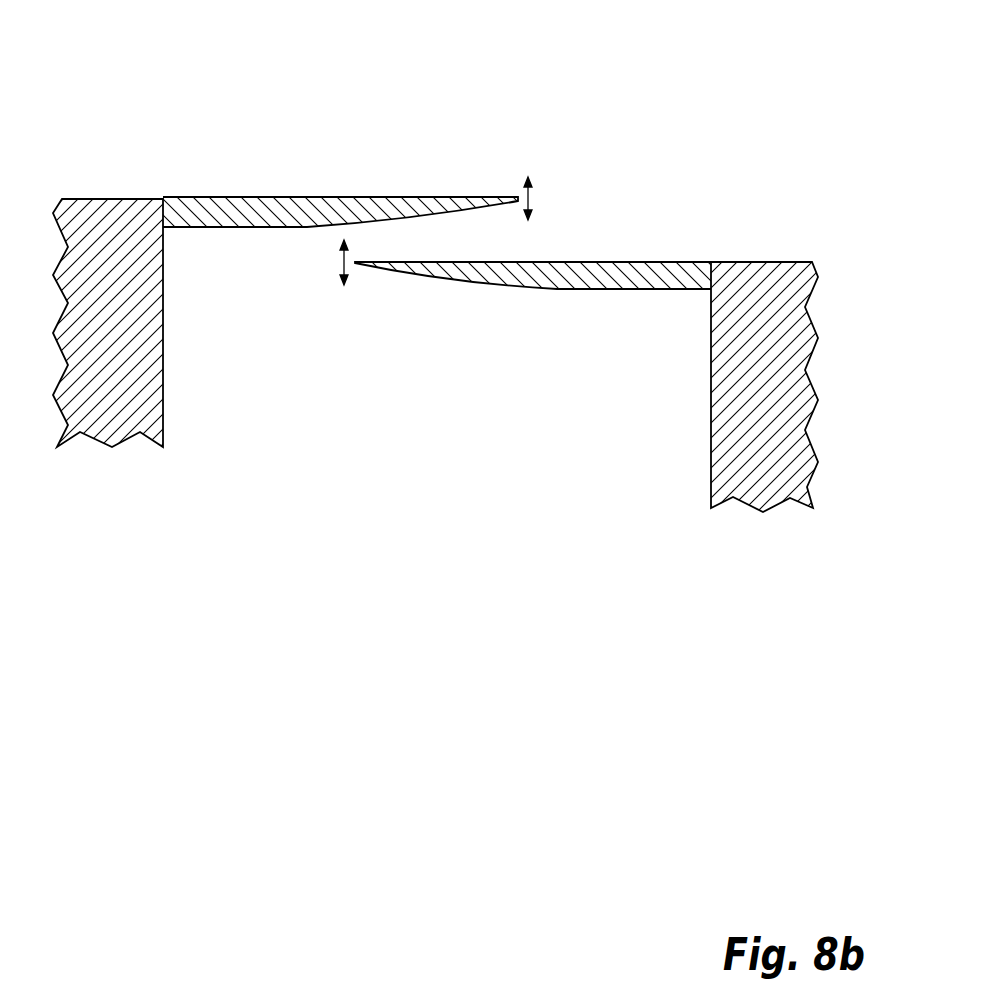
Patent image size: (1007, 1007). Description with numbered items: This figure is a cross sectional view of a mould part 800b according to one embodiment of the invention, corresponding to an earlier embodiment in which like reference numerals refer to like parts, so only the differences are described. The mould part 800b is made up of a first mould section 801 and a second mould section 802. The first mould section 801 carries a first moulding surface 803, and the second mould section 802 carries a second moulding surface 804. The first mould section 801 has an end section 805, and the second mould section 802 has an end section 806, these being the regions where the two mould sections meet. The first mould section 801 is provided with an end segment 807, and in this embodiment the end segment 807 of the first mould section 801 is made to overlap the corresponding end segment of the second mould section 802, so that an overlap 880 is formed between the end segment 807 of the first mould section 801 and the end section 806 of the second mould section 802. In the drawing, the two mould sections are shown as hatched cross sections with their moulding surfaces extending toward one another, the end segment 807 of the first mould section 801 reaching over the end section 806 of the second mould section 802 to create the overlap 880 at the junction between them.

The mould part 800b is at (733, 73).
The first mould section 801 is at (107, 237).
The second mould section 802 is at (787, 283).
The first moulding surface 803 is at (137, 198).
The second moulding surface 804 is at (737, 260).
The end section 805 is at (518, 198).
The end section 806 is at (357, 263).
The end segment 807 is at (370, 210).
The overlap 880 is at (432, 242).